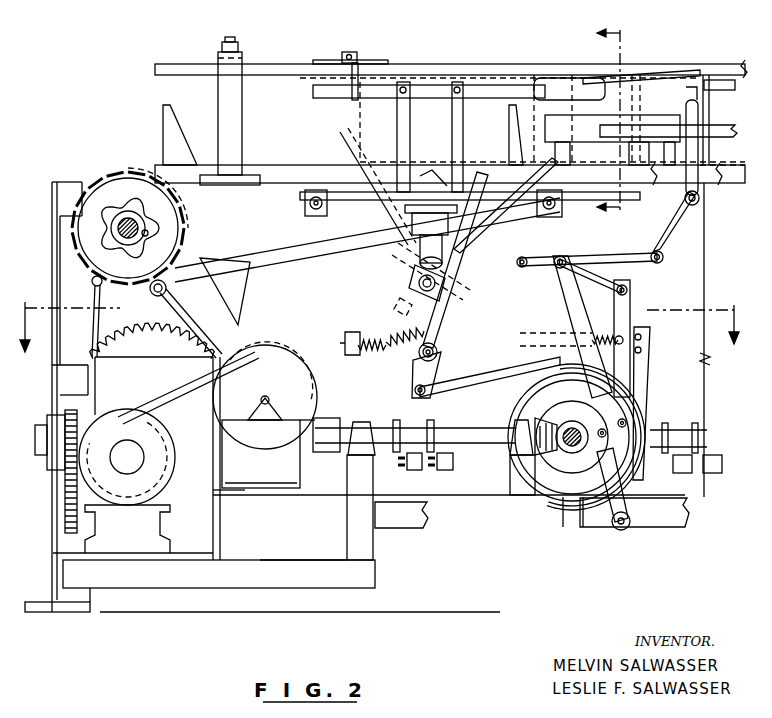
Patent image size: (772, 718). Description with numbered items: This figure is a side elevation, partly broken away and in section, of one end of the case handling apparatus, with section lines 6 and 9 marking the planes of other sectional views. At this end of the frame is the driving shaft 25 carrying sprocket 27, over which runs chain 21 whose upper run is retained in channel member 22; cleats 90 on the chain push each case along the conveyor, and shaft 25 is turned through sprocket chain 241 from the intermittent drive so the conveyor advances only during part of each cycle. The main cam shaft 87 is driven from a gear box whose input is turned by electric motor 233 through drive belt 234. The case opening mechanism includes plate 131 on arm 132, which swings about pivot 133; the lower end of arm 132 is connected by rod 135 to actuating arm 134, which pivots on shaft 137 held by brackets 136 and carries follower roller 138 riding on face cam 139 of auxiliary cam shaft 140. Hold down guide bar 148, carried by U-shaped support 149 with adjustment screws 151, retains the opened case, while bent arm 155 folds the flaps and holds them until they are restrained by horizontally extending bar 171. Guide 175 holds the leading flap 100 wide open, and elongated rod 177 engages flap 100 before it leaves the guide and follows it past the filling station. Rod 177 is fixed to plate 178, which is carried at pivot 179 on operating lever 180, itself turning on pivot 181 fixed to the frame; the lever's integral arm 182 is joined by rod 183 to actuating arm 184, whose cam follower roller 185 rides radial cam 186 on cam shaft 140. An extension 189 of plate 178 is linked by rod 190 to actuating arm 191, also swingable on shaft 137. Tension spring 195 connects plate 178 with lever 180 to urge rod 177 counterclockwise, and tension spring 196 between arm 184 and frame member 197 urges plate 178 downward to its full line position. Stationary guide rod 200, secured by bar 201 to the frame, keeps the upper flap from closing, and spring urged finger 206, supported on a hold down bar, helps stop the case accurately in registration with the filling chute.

The section line 6- 6 is at (597, 121).
The section line 9- 9 is at (381, 342).
The chain 21 is at (106, 177).
The channel member 22 is at (277, 167).
The driving shaft 25 is at (148, 233).
The sprocket 27 is at (130, 234).
The main cam shaft 87 is at (479, 432).
The cleat 90 is at (165, 118).
The flap 100 is at (537, 72).
The plate 131 is at (694, 95).
The arm 132 is at (702, 116).
The pivot 133 is at (700, 200).
The actuating arm 134 is at (578, 319).
The rod 135 is at (627, 258).
The brackets 136 is at (627, 531).
The transversely extending shaft 137 is at (618, 531).
The follower roller 138 is at (580, 411).
The face cam 139 is at (558, 446).
The auxiliary cam shaft 140 is at (571, 449).
The hold down guide bar 148 is at (719, 72).
The U-shaped support 149 is at (243, 118).
The adjustment screws 151 is at (237, 42).
The bent arm 155 is at (725, 322).
The horizontally extending bar 171 is at (484, 90).
The guide 175 is at (587, 133).
The elongated rod 177 is at (385, 216).
The plate 178 is at (413, 381).
The pivot 179 is at (436, 357).
The operating lever 180 is at (455, 260).
The pivot 181 is at (530, 322).
The integral arm 182 is at (476, 242).
The rod 183 is at (598, 282).
The actuating arm 184 is at (632, 318).
The cam follower roller 185 is at (627, 424).
The radial cam 186 is at (628, 418).
The extension 189 is at (426, 395).
The rod 190 is at (512, 375).
The actuating arm 191 is at (648, 361).
The tension spring 195 is at (400, 351).
The tension spring 196 is at (373, 357).
The frame member 197 is at (345, 332).
The stationary guide rod 200 is at (664, 78).
The bar 201 is at (628, 84).
The spring urged finger 206 is at (353, 103).
The electric motor 233 is at (127, 481).
The drive belt 234 is at (186, 390).
The sprocket chain 241 is at (178, 323).